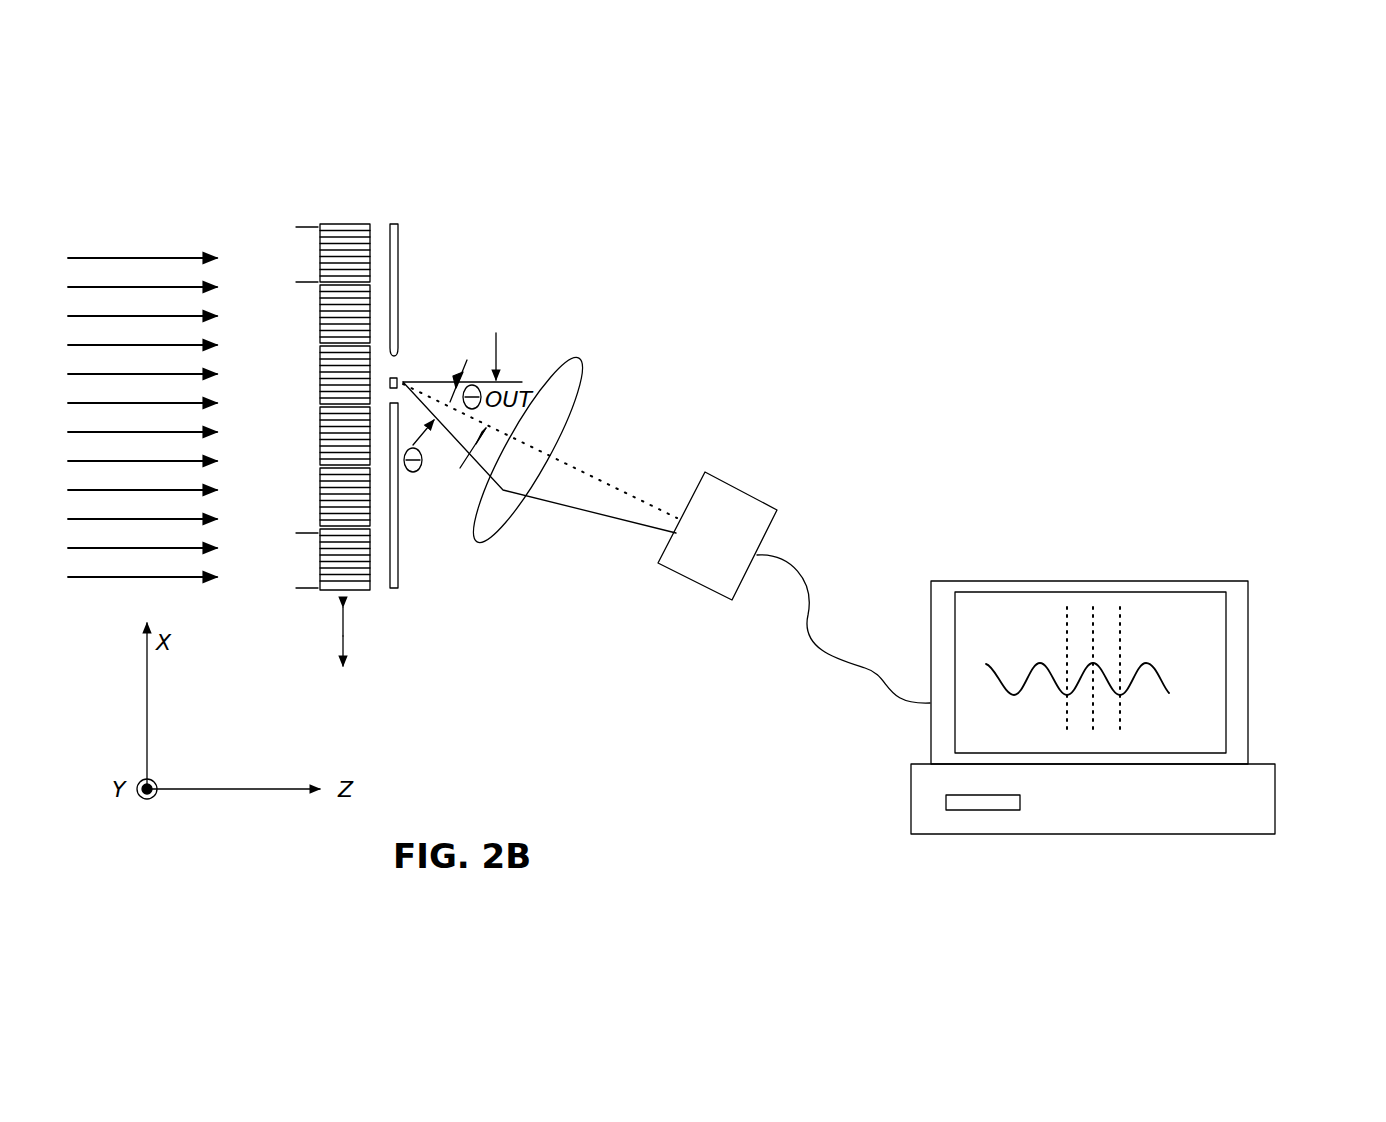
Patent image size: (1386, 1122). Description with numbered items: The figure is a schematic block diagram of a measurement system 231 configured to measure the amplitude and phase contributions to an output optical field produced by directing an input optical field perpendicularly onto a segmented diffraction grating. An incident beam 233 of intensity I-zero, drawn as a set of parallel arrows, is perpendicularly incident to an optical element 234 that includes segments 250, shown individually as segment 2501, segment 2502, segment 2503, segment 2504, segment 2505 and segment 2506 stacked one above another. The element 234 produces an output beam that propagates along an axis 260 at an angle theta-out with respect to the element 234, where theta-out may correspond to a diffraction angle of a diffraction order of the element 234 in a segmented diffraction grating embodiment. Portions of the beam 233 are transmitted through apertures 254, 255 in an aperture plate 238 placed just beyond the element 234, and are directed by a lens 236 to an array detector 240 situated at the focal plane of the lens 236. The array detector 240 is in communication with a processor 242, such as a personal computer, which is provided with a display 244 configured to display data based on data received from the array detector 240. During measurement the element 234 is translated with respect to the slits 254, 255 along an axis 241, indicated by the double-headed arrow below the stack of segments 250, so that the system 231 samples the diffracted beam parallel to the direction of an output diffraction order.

The measurement system 231 is at (938, 323).
The incident beam 233 is at (87, 586).
The optical element 234 is at (356, 374).
The lens 236 is at (570, 407).
The aperture plate 238 is at (398, 557).
The array detector 240 is at (757, 497).
The axis 241 is at (343, 640).
The processor 242 is at (1275, 808).
The display 244 is at (1248, 656).
The segments 250 is at (356, 400).
The first segment 2501 is at (370, 237).
The second segment 2502 is at (320, 320).
The third segment 2503 is at (320, 396).
The fourth segment 2504 is at (320, 455).
The fifth segment 2505 is at (320, 502).
The sixth segment 2506 is at (370, 590).
The aperture 254 is at (398, 357).
The aperture 255 is at (405, 380).
The axis 260 is at (594, 476).